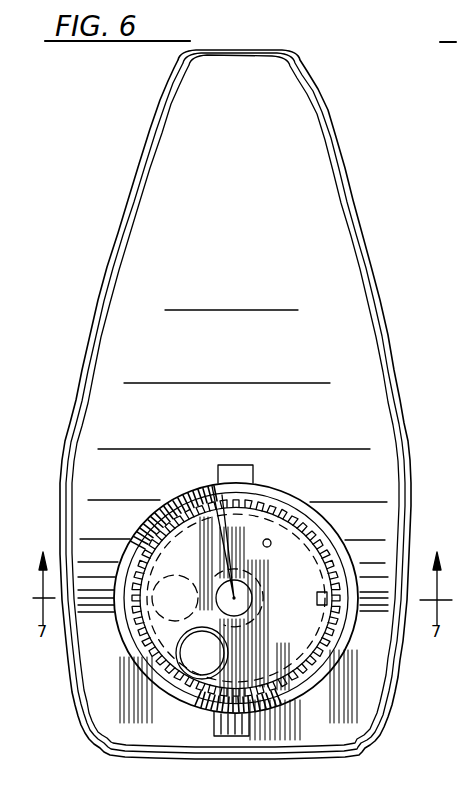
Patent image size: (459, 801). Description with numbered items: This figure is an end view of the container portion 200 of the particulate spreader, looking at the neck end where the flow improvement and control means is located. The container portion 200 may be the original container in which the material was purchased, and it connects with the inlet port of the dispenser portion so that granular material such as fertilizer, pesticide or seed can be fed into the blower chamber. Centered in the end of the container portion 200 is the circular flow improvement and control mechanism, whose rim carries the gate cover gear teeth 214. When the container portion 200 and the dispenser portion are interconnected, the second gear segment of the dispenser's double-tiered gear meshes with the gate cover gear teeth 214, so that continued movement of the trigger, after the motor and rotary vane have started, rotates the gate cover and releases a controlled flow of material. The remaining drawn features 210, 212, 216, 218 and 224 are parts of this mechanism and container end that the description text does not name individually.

The container portion 200 is at (371, 213).
The rotary dial 210 is at (282, 553).
The housing wall ribs 212 is at (358, 567).
The gate cover gear teeth 214 is at (290, 672).
The boss 216 is at (202, 660).
The gear teeth 218 is at (162, 579).
The center hub 224 is at (212, 486).